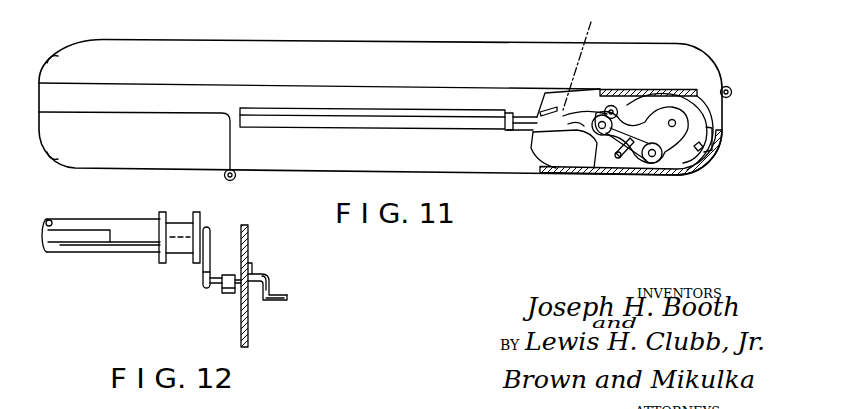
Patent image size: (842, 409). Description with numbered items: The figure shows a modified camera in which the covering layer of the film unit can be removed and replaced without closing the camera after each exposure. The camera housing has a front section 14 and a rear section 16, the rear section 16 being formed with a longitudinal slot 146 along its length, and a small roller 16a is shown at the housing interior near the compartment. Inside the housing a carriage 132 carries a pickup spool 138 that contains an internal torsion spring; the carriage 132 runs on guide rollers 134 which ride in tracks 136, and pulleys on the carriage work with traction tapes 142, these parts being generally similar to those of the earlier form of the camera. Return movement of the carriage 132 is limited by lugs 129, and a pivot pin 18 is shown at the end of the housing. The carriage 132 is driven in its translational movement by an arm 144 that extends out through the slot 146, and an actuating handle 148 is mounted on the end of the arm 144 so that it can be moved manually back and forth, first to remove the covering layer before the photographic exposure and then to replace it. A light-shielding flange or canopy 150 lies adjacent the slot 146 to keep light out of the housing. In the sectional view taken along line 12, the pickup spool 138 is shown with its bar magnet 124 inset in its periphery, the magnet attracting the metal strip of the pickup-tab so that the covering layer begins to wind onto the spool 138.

In FIG. 11, the front section 14 is at (203, 40).
In FIG. 11, the rear section 16 is at (490, 173).
In FIG. 11, the housing compartment roller 16a is at (190, 165).
In FIG. 11, the light-shielding flange 150 is at (337, 110).
In FIG. 12, the light-shielding flange 150 is at (270, 287).
In FIG. 11, the longitudinal slot 146 is at (521, 117).
In FIG. 12, the longitudinal slot 146 is at (182, 243).
In FIG. 11, the section line 12 is at (593, 17).
In FIG. 11, the guide rollers 134 is at (618, 122).
In FIG. 12, the guide rollers 134 is at (230, 296).
In FIG. 11, the pickup spool 138 is at (697, 93).
In FIG. 12, the pickup spool 138 is at (135, 203).
In FIG. 11, the pivot pin 18 is at (731, 91).
In FIG. 11, the traction tapes 142 is at (707, 143).
In FIG. 11, the lugs 129 is at (699, 150).
In FIG. 11, the carriage 132 is at (668, 138).
In FIG. 12, the carriage 132 is at (208, 258).
In FIG. 11, the actuating handle 148 is at (636, 160).
In FIG. 12, the actuating handle 148 is at (270, 303).
In FIG. 11, the tracks 136 is at (593, 135).
In FIG. 12, the bar magnet 124 is at (100, 237).
In FIG. 12, the arm 144 is at (253, 278).